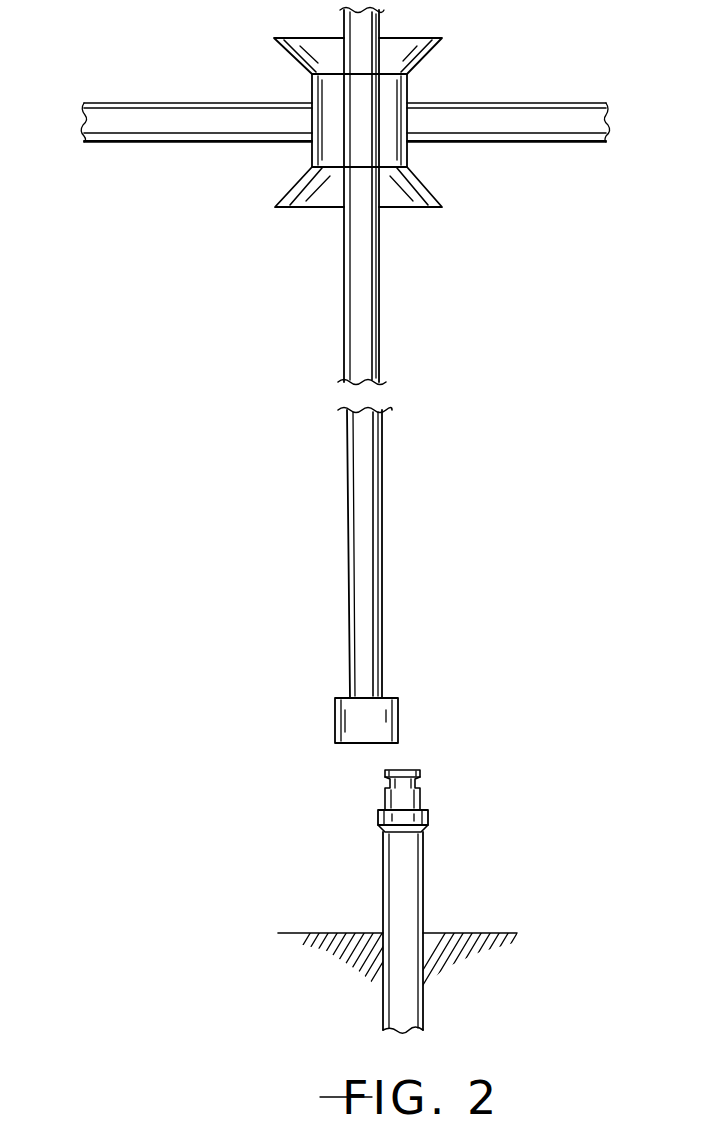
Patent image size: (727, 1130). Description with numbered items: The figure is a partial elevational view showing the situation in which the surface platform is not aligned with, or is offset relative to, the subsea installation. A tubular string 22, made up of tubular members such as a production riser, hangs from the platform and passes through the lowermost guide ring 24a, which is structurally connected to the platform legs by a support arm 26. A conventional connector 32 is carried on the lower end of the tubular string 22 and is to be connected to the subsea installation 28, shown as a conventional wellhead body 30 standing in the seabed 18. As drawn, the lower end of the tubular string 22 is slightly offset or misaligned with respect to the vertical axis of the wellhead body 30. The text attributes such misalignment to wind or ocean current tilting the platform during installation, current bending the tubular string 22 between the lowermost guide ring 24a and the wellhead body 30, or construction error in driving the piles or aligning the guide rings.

The seabed 18 is at (478, 932).
The tubular string 22 is at (378, 307).
The lowermost guide ring 24a is at (429, 56).
The support arm 26 is at (557, 100).
The subsea installation 28 is at (383, 876).
The wellhead body 30 is at (422, 803).
The connector 32 is at (399, 726).